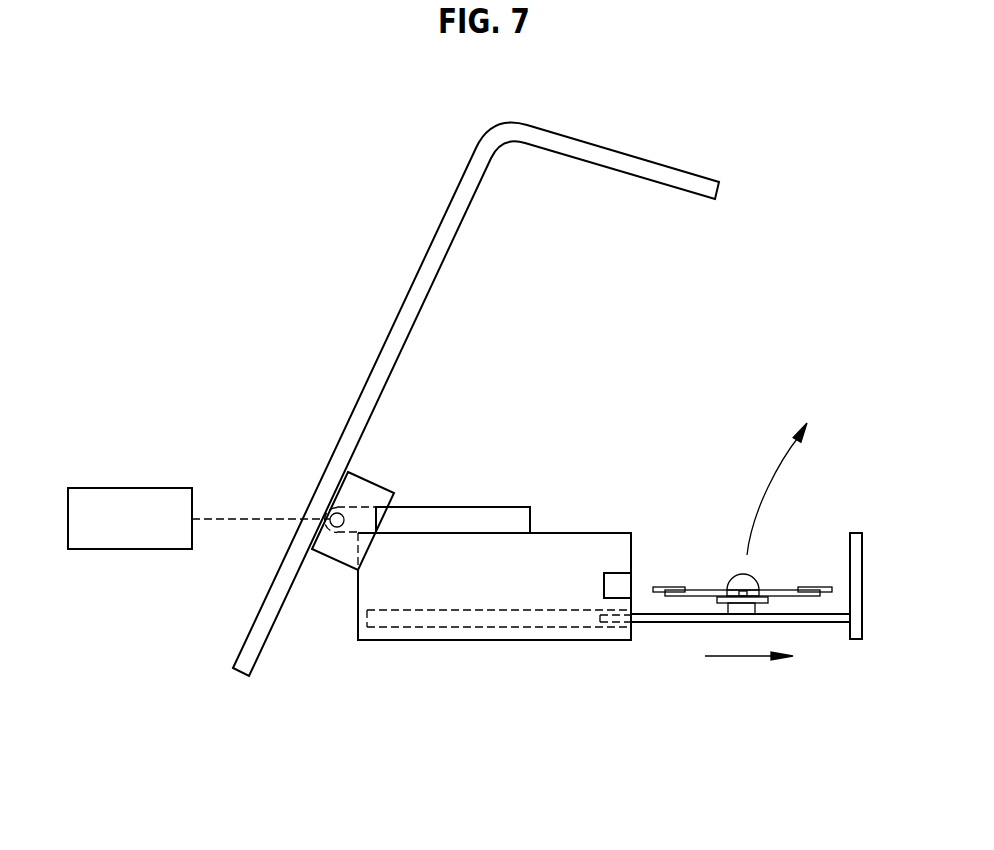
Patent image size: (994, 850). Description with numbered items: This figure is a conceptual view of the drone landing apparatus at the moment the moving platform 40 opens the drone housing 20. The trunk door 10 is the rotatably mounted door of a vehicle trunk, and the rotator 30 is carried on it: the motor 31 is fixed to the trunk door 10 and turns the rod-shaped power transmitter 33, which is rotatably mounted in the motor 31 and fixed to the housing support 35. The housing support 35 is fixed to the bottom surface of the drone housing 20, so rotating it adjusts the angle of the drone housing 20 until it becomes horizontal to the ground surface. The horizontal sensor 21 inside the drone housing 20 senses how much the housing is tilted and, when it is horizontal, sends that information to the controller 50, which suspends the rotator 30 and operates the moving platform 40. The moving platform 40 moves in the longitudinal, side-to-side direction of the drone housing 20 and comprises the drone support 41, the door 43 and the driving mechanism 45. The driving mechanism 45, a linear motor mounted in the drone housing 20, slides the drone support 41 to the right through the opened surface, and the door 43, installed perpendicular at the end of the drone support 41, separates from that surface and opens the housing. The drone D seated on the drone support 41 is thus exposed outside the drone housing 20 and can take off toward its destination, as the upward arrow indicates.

The trunk door 10 is at (403, 322).
The drone housing 20 is at (527, 642).
The horizontal sensor 21 is at (615, 573).
The rotator 30 is at (419, 629).
The motor 31 is at (332, 548).
The power transmitter 33 is at (344, 524).
The housing support 35 is at (453, 518).
The moving platform 40 is at (755, 653).
The drone support 41 is at (817, 618).
The door 43 is at (880, 631).
The driving mechanism 45 is at (615, 611).
The controller 50 is at (128, 507).
The drone D is at (738, 580).